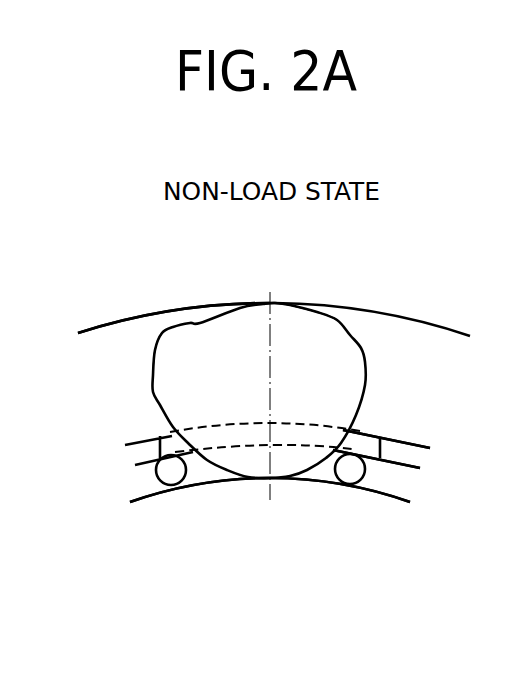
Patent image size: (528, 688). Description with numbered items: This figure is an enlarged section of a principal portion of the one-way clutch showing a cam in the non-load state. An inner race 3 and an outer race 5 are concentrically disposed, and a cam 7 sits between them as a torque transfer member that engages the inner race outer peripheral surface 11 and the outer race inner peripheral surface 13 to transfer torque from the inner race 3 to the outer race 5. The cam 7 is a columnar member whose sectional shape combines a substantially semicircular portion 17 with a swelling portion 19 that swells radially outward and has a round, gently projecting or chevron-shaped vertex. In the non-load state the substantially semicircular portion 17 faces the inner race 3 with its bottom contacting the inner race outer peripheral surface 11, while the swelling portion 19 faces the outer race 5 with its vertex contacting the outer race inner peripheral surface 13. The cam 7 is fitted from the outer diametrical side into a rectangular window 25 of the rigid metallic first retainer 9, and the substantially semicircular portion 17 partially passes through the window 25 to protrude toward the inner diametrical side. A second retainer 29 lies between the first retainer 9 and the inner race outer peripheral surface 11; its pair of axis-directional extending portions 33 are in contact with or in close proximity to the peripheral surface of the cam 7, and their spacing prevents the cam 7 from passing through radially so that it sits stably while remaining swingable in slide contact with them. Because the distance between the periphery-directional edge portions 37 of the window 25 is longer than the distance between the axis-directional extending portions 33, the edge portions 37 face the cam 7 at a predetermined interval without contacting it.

The inner race 3 is at (240, 528).
The outer race 5 is at (168, 298).
The cam 7 is at (363, 345).
The first retainer 9 is at (413, 457).
The inner race outer peripheral surface 11 is at (393, 490).
The outer race inner peripheral surface 13 is at (113, 334).
The substantially semicircular portion 17 is at (158, 402).
The swelling portion 19 is at (300, 328).
The rectangular window 25 is at (362, 442).
The second retainer 29 is at (143, 481).
The axis-directional extending portion 33 is at (167, 474).
The periphery-directional edge portion 37 is at (147, 437).